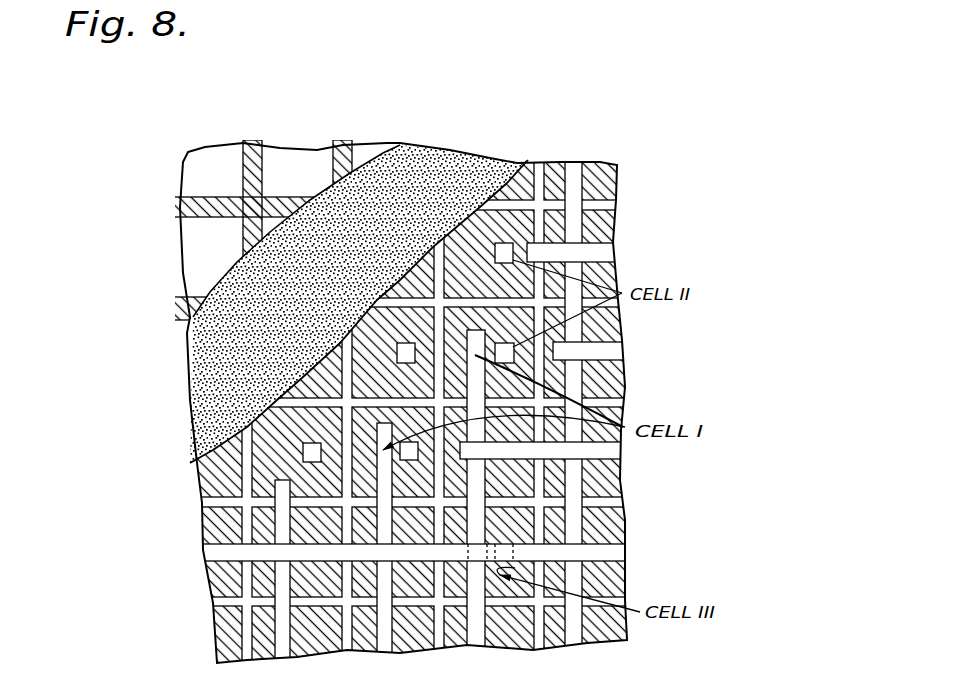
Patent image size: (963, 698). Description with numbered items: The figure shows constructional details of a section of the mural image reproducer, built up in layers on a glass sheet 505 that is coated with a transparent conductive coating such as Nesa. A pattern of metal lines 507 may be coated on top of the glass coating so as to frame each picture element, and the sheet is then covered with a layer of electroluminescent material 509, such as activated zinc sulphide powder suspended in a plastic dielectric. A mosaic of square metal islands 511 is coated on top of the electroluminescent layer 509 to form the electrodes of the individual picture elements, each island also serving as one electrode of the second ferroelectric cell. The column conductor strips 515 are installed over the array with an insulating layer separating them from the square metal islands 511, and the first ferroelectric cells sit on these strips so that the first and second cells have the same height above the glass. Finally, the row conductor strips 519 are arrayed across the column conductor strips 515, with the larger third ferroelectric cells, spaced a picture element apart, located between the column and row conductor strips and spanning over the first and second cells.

The glass sheet 505 is at (214, 146).
The pattern of metal lines 507 is at (253, 148).
The layer of electroluminescent material 509 is at (217, 372).
The square metal islands 511 is at (507, 213).
The column conductor strips 515 is at (582, 630).
The row conductor strips 519 is at (642, 556).